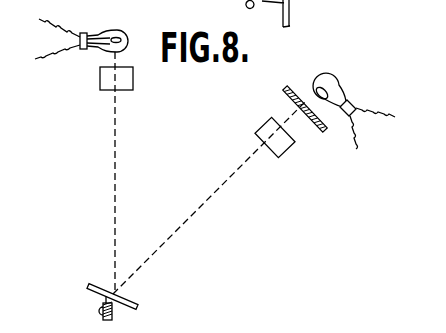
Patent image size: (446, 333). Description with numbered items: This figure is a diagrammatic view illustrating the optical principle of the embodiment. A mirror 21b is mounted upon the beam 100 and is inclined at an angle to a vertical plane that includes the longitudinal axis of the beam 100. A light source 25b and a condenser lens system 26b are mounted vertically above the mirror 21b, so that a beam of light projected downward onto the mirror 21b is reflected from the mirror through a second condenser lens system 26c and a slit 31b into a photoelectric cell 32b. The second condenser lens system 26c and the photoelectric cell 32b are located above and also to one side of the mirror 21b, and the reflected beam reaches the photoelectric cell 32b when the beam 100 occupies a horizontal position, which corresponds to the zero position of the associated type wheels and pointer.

The light source 25b is at (133, 18).
The condenser lens system 26b is at (133, 81).
The slit 31b is at (307, 97).
The photoelectric cell 32b is at (330, 80).
The second condenser lens system 26c is at (284, 146).
The mirror 21b is at (128, 297).
The beam 100 is at (113, 320).